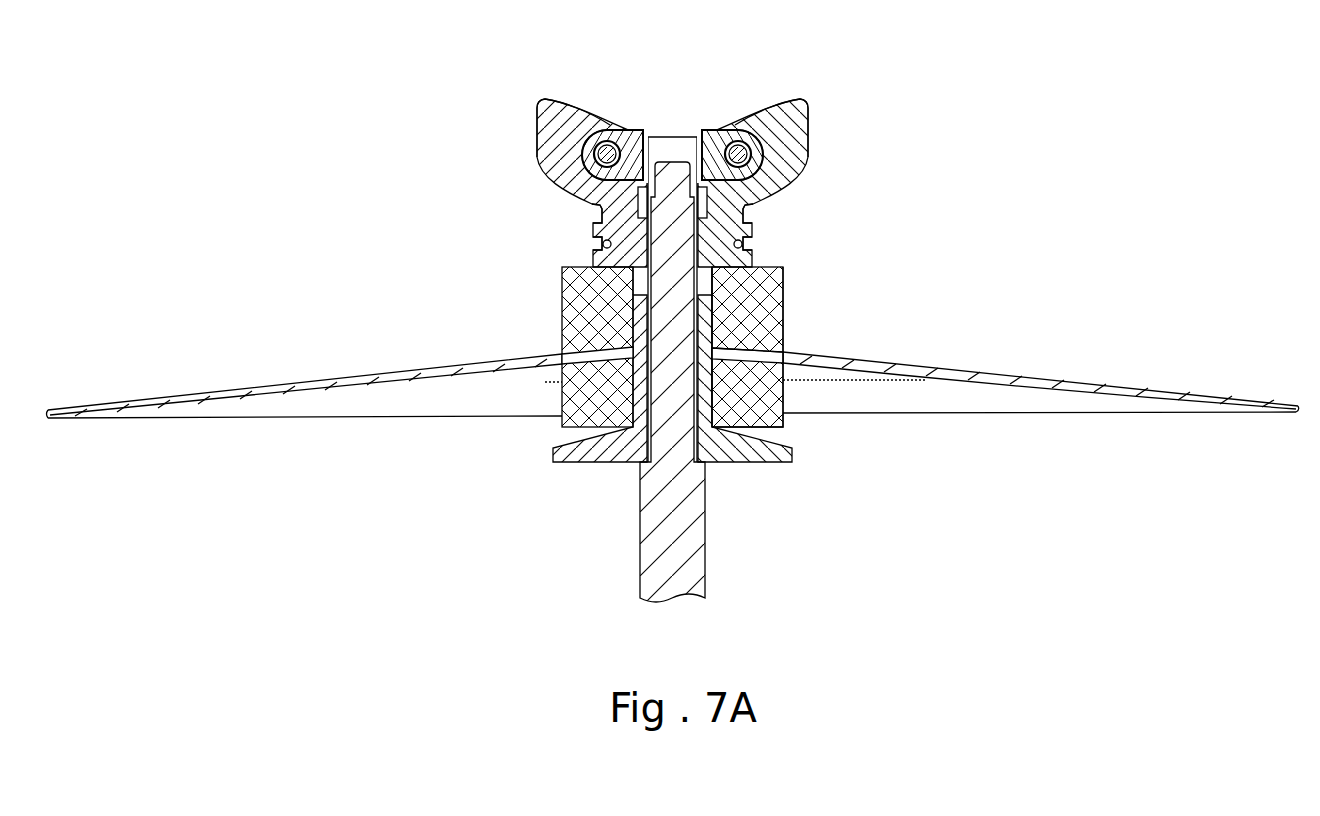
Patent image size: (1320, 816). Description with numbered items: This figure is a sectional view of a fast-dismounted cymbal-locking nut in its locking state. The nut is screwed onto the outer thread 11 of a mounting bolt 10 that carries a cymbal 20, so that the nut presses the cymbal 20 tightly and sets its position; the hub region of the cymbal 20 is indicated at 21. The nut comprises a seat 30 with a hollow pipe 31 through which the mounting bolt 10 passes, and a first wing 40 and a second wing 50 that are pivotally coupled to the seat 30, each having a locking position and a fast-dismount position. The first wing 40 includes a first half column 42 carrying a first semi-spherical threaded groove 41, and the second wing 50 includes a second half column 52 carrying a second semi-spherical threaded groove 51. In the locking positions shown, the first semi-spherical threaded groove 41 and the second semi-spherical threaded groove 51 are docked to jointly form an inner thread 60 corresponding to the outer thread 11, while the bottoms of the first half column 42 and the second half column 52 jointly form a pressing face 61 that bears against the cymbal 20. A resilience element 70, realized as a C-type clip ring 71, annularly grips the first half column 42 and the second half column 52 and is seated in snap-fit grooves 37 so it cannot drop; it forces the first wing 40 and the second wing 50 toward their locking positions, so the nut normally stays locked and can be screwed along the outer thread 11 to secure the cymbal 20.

The mounting bolt 10 is at (682, 528).
The outer thread 11 is at (677, 340).
The cymbal 20 is at (1175, 397).
The hub portion 21 is at (783, 273).
The seat 30 is at (659, 239).
The hollow pipe 31 is at (668, 145).
The snap-fit groove 37 is at (597, 245).
The first wing 40 is at (530, 155).
The first semi-spherical threaded groove 41 is at (562, 278).
The first half column 42 is at (593, 222).
The second wing 50 is at (839, 136).
The second semi-spherical threaded groove 51 is at (783, 327).
The second half column 52 is at (745, 210).
The inner thread 60 is at (665, 347).
The pressing face 61 is at (772, 280).
The resilience element 70 is at (858, 235).
The C-type clip ring 71 is at (753, 247).